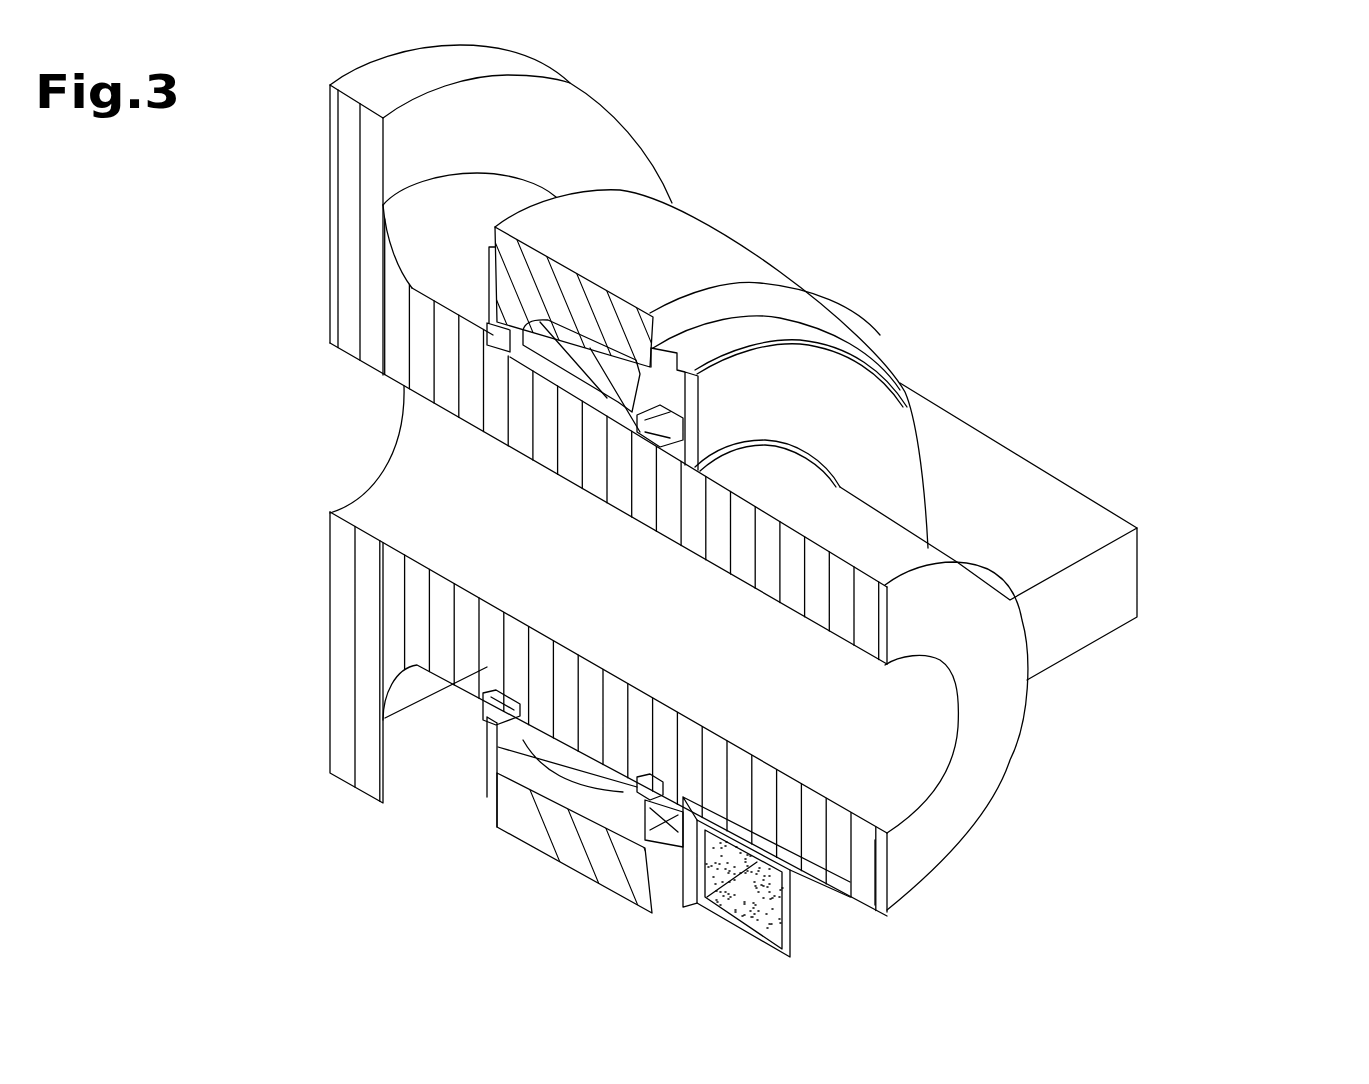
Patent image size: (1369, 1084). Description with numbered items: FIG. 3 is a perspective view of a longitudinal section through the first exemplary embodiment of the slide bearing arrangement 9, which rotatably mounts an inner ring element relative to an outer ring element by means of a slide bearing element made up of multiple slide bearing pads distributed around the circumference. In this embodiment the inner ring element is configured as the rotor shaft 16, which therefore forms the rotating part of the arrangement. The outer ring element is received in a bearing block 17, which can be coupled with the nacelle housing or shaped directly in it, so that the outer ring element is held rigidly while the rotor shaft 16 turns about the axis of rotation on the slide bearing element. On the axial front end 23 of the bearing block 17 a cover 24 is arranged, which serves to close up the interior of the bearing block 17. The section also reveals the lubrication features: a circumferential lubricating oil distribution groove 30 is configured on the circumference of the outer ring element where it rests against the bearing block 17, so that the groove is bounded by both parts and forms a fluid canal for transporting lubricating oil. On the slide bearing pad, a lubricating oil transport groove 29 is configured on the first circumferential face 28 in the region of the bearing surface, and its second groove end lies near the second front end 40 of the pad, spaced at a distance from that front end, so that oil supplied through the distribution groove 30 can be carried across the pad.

The slide bearing arrangement 9 is at (1273, 138).
The rotor shaft 16 is at (905, 555).
The bearing block 17 is at (713, 260).
The axial front end 23 is at (860, 331).
The cover 24 is at (860, 433).
The first circumferential face 28 is at (713, 917).
The lubricating oil transport groove 29 is at (790, 923).
The lubricating oil distribution groove 30 is at (652, 850).
The second front end 40 is at (650, 355).